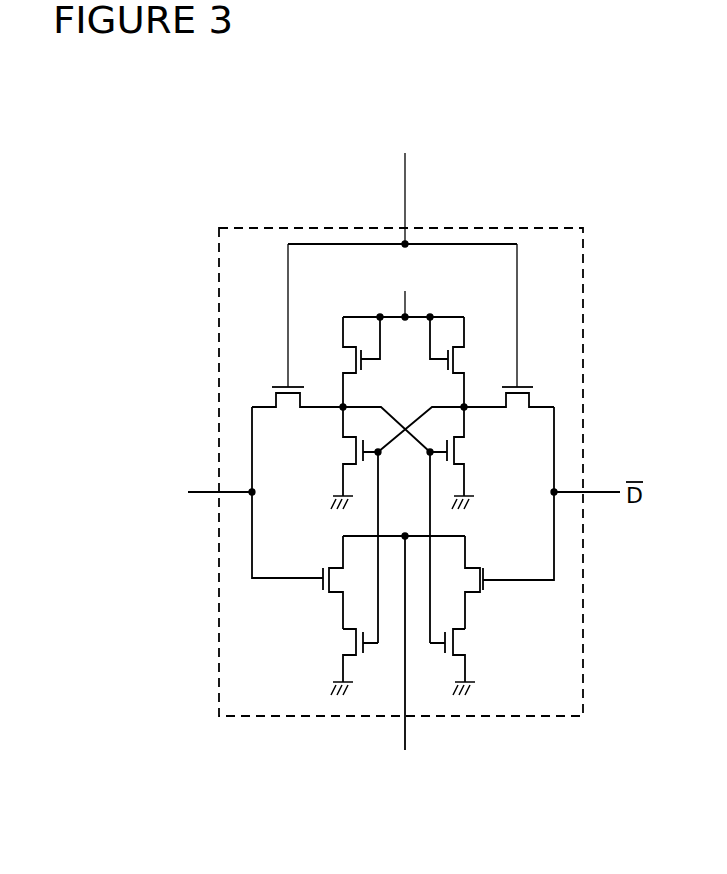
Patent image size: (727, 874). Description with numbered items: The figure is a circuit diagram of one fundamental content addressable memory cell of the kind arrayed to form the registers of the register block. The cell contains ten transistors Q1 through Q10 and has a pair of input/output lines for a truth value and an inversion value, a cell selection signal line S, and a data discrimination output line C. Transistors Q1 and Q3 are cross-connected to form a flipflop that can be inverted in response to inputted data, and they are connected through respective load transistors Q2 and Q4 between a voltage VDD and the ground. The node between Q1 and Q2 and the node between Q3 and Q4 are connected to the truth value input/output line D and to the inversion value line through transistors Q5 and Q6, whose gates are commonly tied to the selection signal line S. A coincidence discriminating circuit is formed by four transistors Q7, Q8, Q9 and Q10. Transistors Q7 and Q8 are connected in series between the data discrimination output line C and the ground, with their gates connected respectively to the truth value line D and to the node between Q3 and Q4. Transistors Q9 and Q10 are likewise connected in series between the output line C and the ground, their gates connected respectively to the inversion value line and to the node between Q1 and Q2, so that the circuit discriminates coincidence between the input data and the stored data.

The transistor Q1 is at (340, 458).
The load transistor Q2 is at (350, 362).
The transistor Q3 is at (469, 458).
The load transistor Q4 is at (461, 362).
The transistor Q5 is at (295, 393).
The transistor Q6 is at (510, 395).
The transistor Q7 is at (345, 662).
The transistor Q8 is at (325, 582).
The transistor Q9 is at (461, 662).
The transistor Q10 is at (486, 582).
The cell selection signal line S is at (405, 185).
The data discrimination output line C is at (404, 659).
The truth value input/output line D is at (205, 494).
The voltage VDD is at (408, 292).